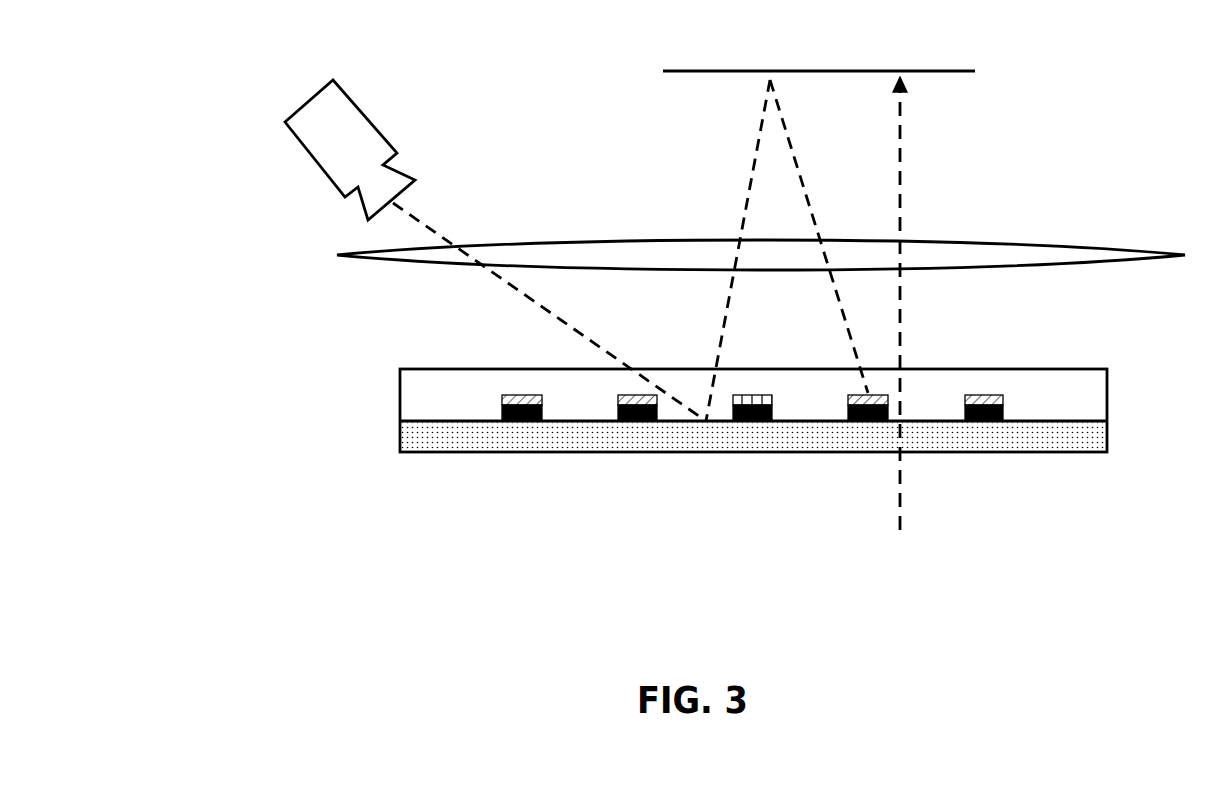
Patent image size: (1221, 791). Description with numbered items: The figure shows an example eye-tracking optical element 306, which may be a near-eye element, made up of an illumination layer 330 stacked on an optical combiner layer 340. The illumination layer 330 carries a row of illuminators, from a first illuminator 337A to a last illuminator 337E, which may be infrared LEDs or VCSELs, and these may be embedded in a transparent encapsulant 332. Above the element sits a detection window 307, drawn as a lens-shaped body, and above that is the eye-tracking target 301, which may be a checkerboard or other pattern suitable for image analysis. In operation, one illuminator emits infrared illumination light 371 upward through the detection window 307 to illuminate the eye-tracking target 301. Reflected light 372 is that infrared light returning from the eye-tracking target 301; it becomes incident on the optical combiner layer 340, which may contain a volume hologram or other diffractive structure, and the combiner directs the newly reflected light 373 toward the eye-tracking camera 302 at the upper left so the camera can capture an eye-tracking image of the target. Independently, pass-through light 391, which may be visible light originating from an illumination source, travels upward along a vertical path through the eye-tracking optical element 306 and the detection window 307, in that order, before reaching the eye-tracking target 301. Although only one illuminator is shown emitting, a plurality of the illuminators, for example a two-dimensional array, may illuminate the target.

The eye-tracking target 301 is at (840, 71).
The eye-tracking camera 302 is at (358, 103).
The eye-tracking optical element 306 is at (353, 405).
The detection window 307 is at (933, 240).
The illumination layer 330 is at (1113, 372).
The transparent encapsulant 332 is at (940, 403).
The illuminator 337A is at (542, 412).
The illuminator 337E is at (1003, 417).
The optical combiner layer 340 is at (1113, 422).
The infrared illumination light 371 is at (795, 147).
The reflected light 372 is at (745, 188).
The newly reflected light 373 is at (593, 348).
The pass-through light 391 is at (900, 320).